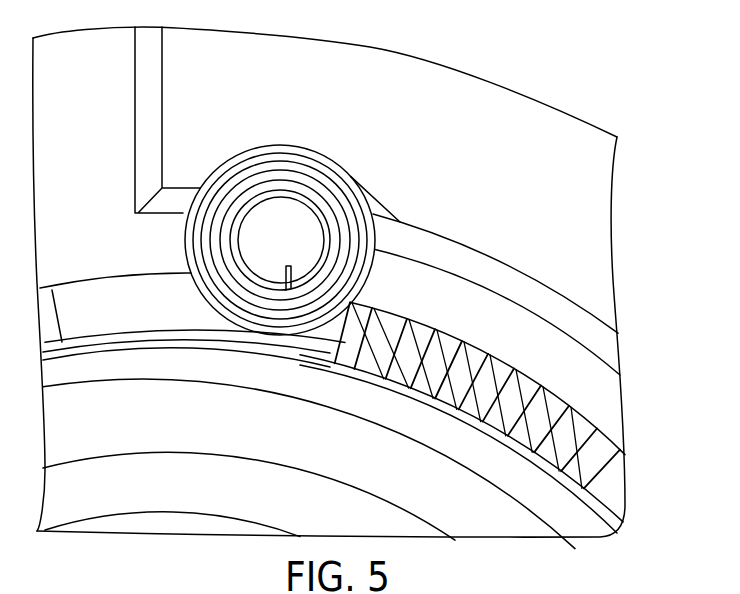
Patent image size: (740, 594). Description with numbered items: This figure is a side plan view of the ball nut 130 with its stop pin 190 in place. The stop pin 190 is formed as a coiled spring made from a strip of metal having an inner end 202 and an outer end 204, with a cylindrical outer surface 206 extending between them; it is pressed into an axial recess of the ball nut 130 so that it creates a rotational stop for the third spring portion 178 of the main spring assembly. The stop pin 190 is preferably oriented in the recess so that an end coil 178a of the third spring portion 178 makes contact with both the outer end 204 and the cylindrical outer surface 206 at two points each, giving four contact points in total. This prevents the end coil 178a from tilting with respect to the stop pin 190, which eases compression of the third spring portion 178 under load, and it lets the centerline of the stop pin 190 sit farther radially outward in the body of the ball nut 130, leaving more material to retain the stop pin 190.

The ball nut 130 is at (598, 252).
The third spring portion 178 is at (623, 485).
The end coil 178a is at (345, 330).
The stop pin 190 is at (280, 230).
The inner end 202 is at (287, 273).
The outer end 204 is at (362, 295).
The cylindrical outer surface 206 is at (183, 233).